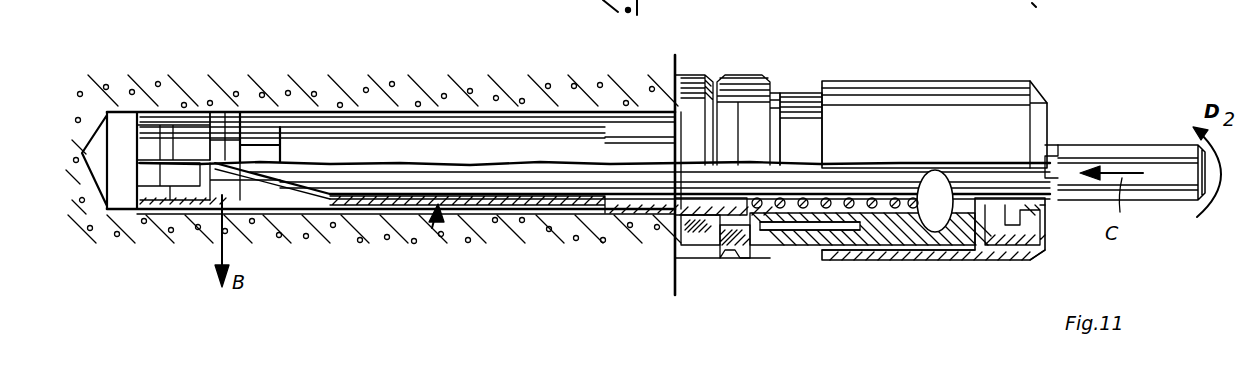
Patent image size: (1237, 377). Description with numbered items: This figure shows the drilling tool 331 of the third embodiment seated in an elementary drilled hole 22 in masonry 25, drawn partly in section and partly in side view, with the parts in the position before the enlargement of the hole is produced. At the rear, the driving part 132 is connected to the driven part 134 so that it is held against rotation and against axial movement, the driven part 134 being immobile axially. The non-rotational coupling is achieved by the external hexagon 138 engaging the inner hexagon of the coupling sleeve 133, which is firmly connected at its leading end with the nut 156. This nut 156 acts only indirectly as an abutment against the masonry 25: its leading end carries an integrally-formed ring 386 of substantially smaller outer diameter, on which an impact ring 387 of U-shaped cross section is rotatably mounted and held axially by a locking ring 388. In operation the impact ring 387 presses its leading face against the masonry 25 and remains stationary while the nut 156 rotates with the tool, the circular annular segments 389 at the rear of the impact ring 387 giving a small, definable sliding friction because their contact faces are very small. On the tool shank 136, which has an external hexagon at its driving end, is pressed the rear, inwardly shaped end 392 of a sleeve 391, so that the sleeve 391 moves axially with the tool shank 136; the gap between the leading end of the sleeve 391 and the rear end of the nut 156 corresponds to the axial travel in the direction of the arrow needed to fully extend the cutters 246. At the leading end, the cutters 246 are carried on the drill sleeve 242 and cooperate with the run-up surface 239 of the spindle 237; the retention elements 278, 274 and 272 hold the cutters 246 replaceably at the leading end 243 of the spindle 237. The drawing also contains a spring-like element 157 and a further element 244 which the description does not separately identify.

The elementary drilled hole 22 is at (430, 118).
The masonry 25 is at (545, 222).
The driving part 132 is at (1062, 145).
The coupling sleeve 133 is at (955, 262).
The driven part 134 is at (770, 55).
The tool shank 136 is at (1150, 146).
The external hexagon 138 is at (933, 215).
The nut 156 is at (770, 258).
The spring 157 is at (866, 250).
The spindle 237 is at (355, 165).
The run-up surface 239 is at (320, 200).
The drill sleeve 242 is at (432, 228).
The leading end 243 is at (115, 178).
The wedge 244 is at (245, 135).
The cutter 246 is at (243, 188).
The retention element 272 is at (210, 125).
The retention element 274 is at (172, 192).
The retention element 278 is at (172, 130).
The drilling tool 331 is at (1148, 72).
The integrally-formed ring 386 is at (700, 248).
The impact ring 387 is at (688, 125).
The locking ring 388 is at (670, 245).
The circular annular segment 389 is at (733, 258).
The sleeve 391 is at (915, 145).
The rear inwardly shaped end 392 is at (1035, 240).